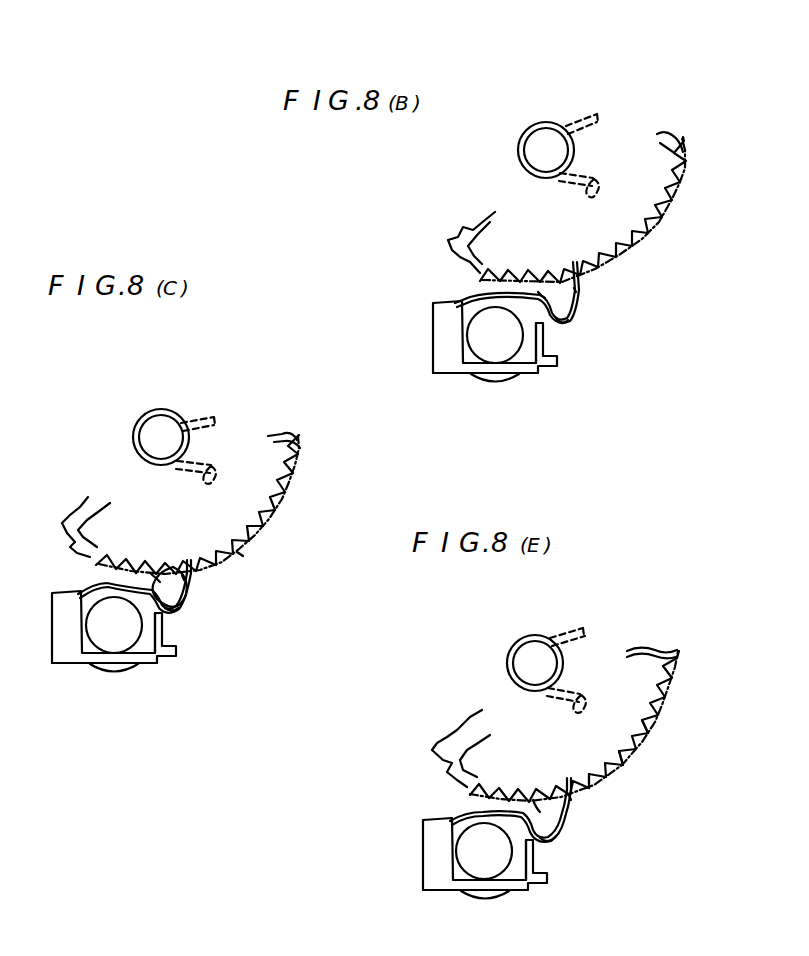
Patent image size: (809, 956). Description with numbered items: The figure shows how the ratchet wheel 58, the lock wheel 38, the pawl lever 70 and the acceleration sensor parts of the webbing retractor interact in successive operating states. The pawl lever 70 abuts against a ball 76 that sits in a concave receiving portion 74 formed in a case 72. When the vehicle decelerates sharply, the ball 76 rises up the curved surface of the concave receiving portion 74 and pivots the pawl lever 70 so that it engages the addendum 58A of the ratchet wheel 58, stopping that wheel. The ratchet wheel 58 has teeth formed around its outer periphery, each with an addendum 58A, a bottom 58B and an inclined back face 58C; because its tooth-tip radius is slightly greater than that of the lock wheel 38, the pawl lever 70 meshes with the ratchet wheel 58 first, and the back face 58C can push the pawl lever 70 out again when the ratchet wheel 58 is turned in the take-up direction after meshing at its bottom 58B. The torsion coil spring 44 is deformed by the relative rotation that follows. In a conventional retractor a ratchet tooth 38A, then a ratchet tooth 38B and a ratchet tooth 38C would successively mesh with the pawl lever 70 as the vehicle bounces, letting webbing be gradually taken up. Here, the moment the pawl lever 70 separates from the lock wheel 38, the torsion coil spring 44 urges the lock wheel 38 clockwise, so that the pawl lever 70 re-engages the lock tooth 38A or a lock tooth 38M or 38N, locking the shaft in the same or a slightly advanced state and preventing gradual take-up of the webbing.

In FIG. 8B, the lock wheel 38 is at (688, 195).
In FIG. 8C, the lock wheel 38 is at (306, 483).
In FIG. 8E, the lock wheel 38 is at (668, 692).
In FIG. 8C, the ratchet tooth 38A is at (240, 558).
In FIG. 8E, the ratchet tooth 38A is at (588, 793).
In FIG. 8C, the ratchet tooth 38B is at (195, 583).
In FIG. 8C, the ratchet tooth 38C is at (175, 622).
In FIG. 8E, the lock tooth 38M is at (640, 757).
In FIG. 8E, the lock tooth 38N is at (617, 783).
In FIG. 8B, the torsion coil spring 44 is at (517, 148).
In FIG. 8C, the torsion coil spring 44 is at (147, 411).
In FIG. 8E, the torsion coil spring 44 is at (510, 650).
In FIG. 8B, the ratchet wheel 58 is at (694, 172).
In FIG. 8C, the ratchet wheel 58 is at (302, 460).
In FIG. 8E, the ratchet wheel 58 is at (692, 681).
In FIG. 8B, the addendum 58A is at (574, 290).
In FIG. 8C, the addendum 58A is at (182, 575).
In FIG. 8E, the addendum 58A is at (573, 797).
In FIG. 8B, the bottom 58B is at (543, 292).
In FIG. 8C, the bottom 58B is at (153, 572).
In FIG. 8E, the bottom 58B is at (535, 800).
In FIG. 8B, the back face 58C is at (583, 293).
In FIG. 8C, the back face 58C is at (185, 603).
In FIG. 8E, the back face 58C is at (567, 815).
In FIG. 8B, the pawl lever 70 is at (563, 325).
In FIG. 8C, the pawl lever 70 is at (90, 590).
In FIG. 8E, the pawl lever 70 is at (467, 813).
In FIG. 8B, the case 72 is at (445, 374).
In FIG. 8C, the case 72 is at (64, 664).
In FIG. 8E, the case 72 is at (435, 891).
In FIG. 8B, the concave receiving portion 74 is at (497, 385).
In FIG. 8C, the concave receiving portion 74 is at (116, 675).
In FIG. 8E, the concave receiving portion 74 is at (487, 902).
In FIG. 8B, the ball 76 is at (505, 347).
In FIG. 8C, the ball 76 is at (124, 637).
In FIG. 8E, the ball 76 is at (495, 864).